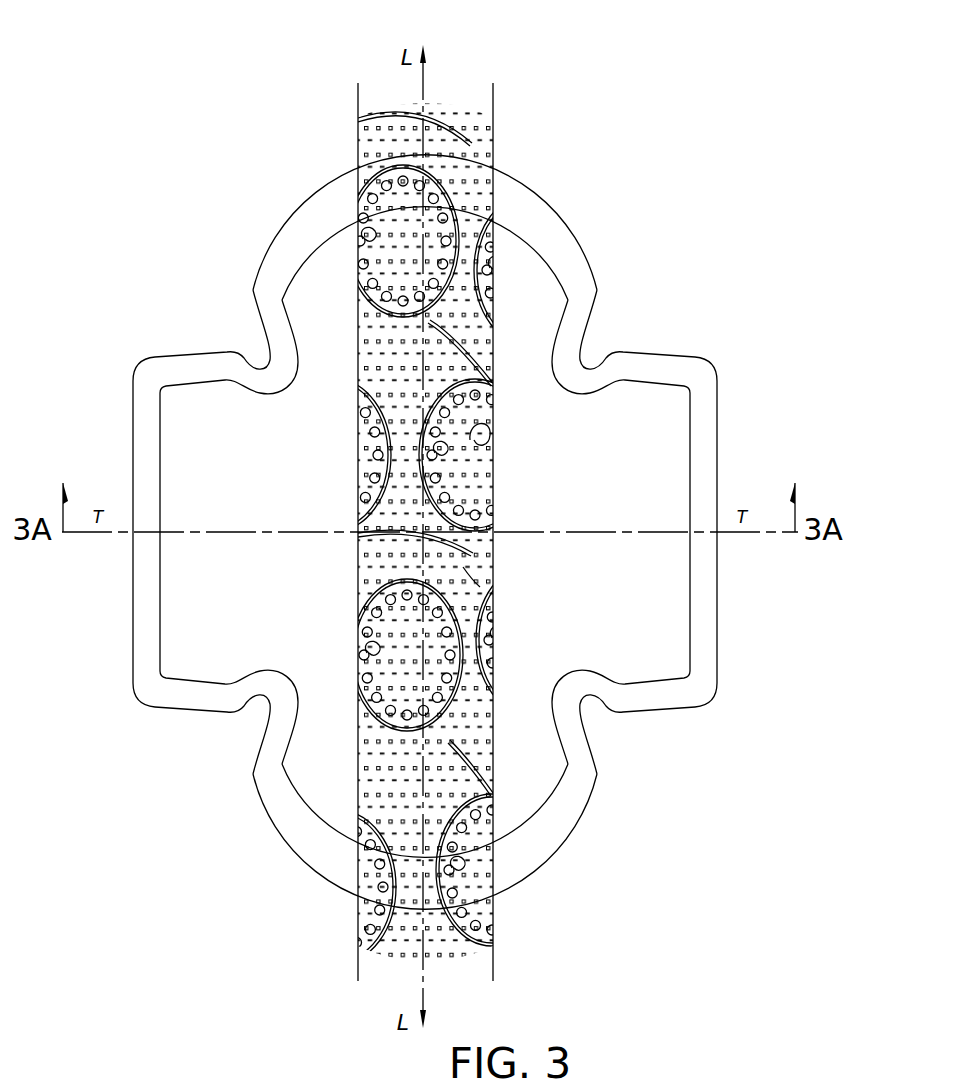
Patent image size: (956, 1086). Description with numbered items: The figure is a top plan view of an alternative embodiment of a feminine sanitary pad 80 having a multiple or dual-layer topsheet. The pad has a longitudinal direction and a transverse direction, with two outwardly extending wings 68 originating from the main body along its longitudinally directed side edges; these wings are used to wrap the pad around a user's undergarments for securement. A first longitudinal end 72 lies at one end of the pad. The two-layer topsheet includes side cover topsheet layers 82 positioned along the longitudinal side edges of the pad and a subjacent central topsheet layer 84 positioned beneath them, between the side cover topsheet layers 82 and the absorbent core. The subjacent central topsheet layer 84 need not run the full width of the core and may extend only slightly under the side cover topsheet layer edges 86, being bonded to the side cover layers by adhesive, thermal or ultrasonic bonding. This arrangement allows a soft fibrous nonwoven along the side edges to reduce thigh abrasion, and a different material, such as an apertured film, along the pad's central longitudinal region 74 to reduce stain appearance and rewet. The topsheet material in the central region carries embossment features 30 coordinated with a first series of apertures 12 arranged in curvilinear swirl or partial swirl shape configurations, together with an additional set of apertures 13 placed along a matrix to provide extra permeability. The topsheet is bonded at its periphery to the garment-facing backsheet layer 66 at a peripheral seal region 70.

The sanitary pad 80 is at (436, 522).
The side cover topsheet layers 82 is at (548, 176).
The peripheral seal region 70 is at (592, 203).
The backsheet layer 66 is at (575, 263).
The wings 68 is at (700, 630).
The embossment features 30 is at (332, 522).
The first series of apertures 12 is at (373, 302).
The additional set of apertures 13 is at (365, 768).
The first longitudinal end 72 is at (400, 107).
The central longitudinal region 74 is at (433, 942).
The subjacent central topsheet layer 84 is at (384, 955).
The side cover topsheet layer edges 86 is at (357, 112).